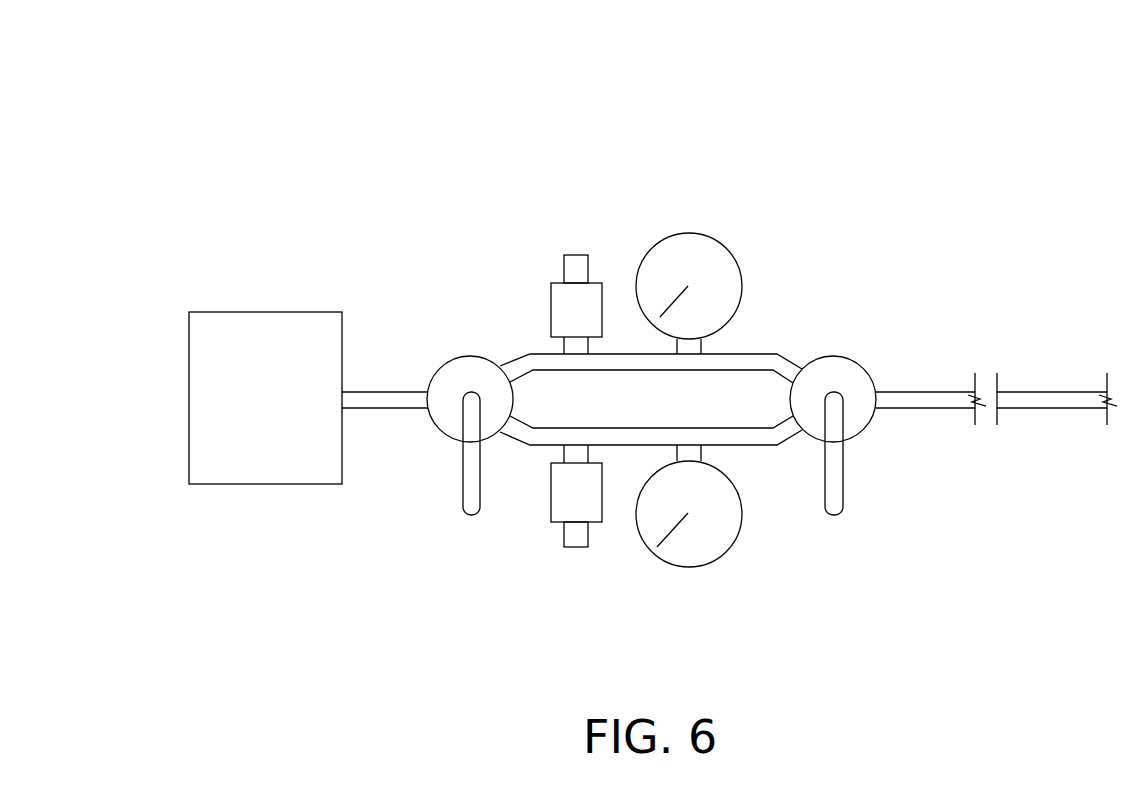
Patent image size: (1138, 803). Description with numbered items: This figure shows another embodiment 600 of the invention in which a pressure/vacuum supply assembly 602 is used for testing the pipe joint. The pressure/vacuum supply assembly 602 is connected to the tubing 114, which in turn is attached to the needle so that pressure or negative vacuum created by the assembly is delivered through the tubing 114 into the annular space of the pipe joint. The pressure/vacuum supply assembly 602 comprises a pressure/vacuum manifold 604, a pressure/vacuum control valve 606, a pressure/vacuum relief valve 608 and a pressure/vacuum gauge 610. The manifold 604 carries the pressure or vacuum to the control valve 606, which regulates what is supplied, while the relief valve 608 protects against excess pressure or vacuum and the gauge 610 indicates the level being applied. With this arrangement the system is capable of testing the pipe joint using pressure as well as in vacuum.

The embodiment 600 is at (382, 74).
The pressure/vacuum supply assembly 602 is at (265, 312).
The pressure/vacuum manifold 604 is at (753, 354).
The pressure/vacuum control valve 606 is at (472, 357).
The pressure/vacuum relief valve 608 is at (577, 253).
The pressure/vacuum gauge 610 is at (690, 232).
The tubing 114 is at (1053, 400).